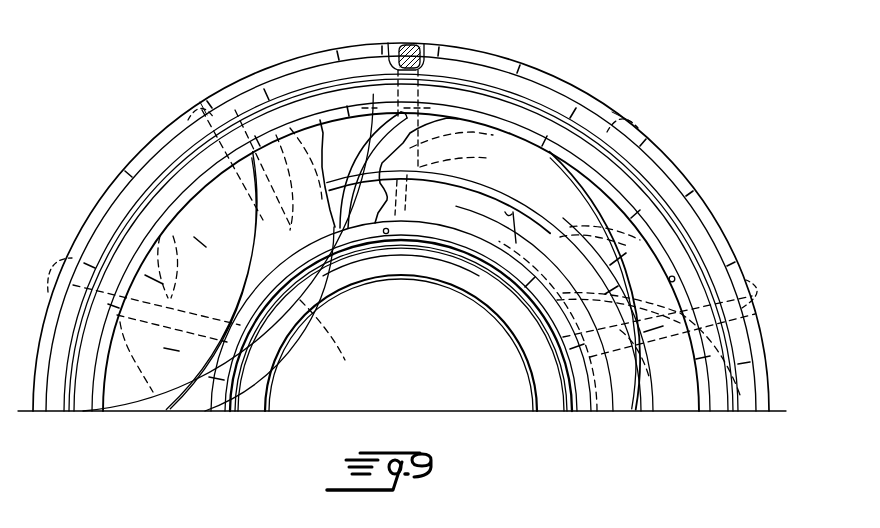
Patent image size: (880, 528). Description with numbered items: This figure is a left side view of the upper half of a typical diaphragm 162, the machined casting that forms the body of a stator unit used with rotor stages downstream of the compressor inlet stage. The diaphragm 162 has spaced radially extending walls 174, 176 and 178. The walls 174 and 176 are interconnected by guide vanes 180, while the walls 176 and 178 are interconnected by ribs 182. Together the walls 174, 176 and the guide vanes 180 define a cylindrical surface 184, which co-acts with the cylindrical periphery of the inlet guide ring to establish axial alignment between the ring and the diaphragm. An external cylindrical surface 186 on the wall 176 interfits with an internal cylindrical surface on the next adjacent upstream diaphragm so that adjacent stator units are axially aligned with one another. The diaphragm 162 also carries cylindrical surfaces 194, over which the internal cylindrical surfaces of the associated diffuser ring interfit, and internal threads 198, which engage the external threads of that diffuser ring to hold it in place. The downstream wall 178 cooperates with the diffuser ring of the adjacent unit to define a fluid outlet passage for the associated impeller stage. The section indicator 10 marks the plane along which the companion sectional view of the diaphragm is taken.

The section line 10- 10 is at (455, 69).
The diaphragm 162 is at (79, 229).
The radially extending wall 174 is at (201, 236).
The radially extending wall 176 is at (287, 101).
The radially extending wall 178 is at (427, 44).
The guide vanes 180 is at (374, 141).
The ribs 182 is at (407, 45).
The cylindrical surface 184 is at (526, 263).
The external cylindrical surface 186 is at (688, 203).
The cylindrical surfaces 194 is at (669, 279).
The internal threads 198 is at (512, 214).